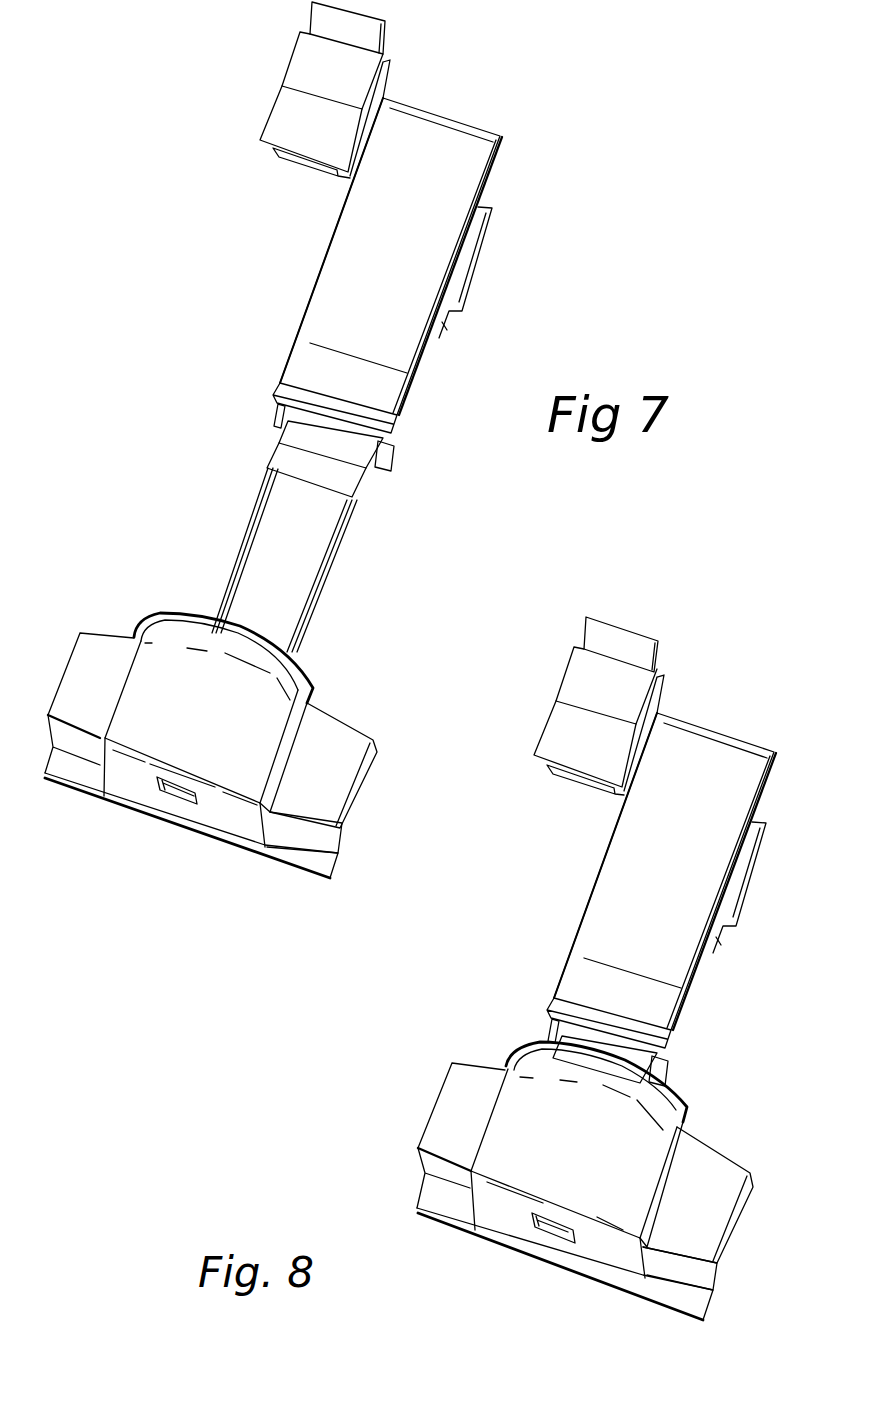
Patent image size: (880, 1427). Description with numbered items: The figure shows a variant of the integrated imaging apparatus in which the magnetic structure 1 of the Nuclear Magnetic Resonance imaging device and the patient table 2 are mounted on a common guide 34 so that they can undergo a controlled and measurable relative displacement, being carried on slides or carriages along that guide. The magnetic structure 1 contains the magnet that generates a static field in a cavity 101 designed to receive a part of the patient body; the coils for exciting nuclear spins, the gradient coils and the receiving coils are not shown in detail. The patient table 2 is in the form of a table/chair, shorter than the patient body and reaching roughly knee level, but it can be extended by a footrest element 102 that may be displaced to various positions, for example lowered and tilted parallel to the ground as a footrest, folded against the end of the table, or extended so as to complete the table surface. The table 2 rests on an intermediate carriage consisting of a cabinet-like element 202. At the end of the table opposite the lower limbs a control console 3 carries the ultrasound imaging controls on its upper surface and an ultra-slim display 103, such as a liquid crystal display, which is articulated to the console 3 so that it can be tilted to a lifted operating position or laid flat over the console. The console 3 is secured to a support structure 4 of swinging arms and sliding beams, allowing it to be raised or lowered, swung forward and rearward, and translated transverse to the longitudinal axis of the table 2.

In FIG. 7, the magnetic structure 1 is at (112, 803).
In FIG. 8, the magnetic structure 1 is at (483, 1058).
In FIG. 7, the patient table 2 is at (433, 352).
In FIG. 8, the patient table 2 is at (765, 748).
In FIG. 7, the control console 3 is at (270, 100).
In FIG. 8, the control console 3 is at (554, 700).
In FIG. 7, the support structure 4 is at (308, 168).
In FIG. 8, the support structure 4 is at (563, 778).
In FIG. 7, the guide 34 is at (247, 527).
In FIG. 7, the cavity 101 is at (173, 803).
In FIG. 8, the cavity 101 is at (552, 1240).
In FIG. 7, the footrest element 102 is at (283, 449).
In FIG. 7, the ultra-slim display 103 is at (383, 36).
In FIG. 8, the ultra-slim display 103 is at (656, 652).
In FIG. 7, the cabinet-like element 202 is at (478, 255).
In FIG. 8, the cabinet-like element 202 is at (752, 870).